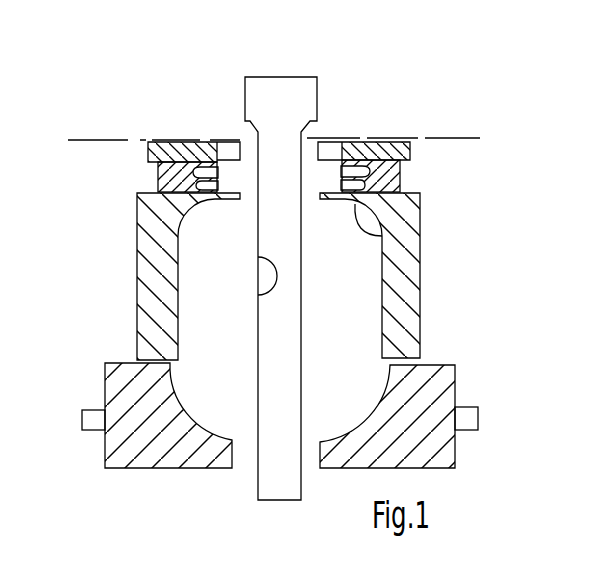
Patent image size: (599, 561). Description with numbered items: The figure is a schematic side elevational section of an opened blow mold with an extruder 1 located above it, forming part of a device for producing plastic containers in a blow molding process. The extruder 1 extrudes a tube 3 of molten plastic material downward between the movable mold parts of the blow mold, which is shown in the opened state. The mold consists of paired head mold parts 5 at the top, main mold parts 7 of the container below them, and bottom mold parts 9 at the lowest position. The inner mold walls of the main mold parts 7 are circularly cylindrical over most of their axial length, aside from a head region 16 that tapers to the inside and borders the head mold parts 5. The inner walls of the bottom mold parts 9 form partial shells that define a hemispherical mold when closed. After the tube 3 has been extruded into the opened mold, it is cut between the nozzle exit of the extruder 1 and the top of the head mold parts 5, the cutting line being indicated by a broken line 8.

The extruder 1 is at (283, 83).
The tube 3 is at (258, 295).
The head mold parts 5 is at (160, 174).
The main mold parts 7 is at (137, 235).
The cutting line 8 is at (405, 135).
The bottom mold parts 9 is at (133, 393).
The head region 16 is at (381, 235).